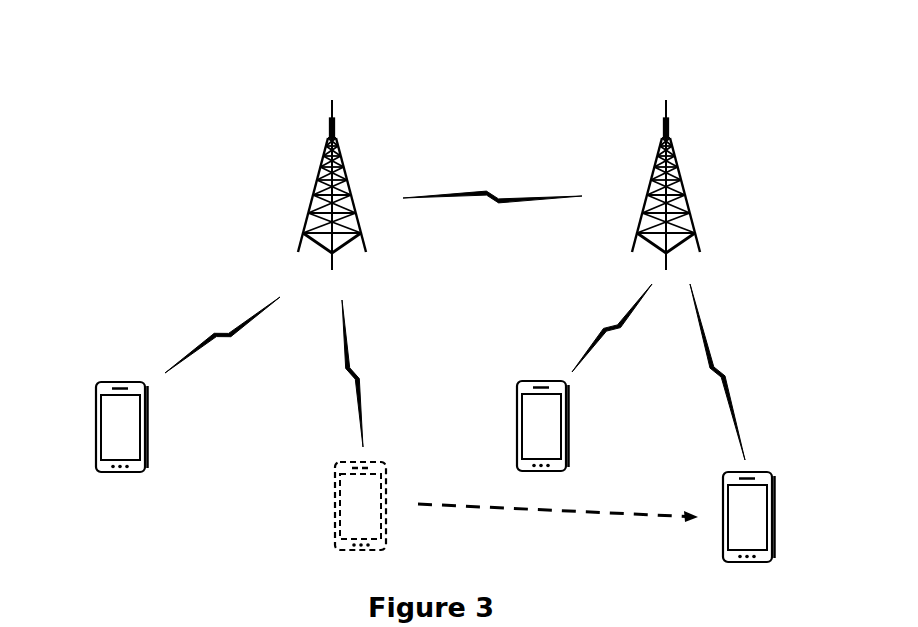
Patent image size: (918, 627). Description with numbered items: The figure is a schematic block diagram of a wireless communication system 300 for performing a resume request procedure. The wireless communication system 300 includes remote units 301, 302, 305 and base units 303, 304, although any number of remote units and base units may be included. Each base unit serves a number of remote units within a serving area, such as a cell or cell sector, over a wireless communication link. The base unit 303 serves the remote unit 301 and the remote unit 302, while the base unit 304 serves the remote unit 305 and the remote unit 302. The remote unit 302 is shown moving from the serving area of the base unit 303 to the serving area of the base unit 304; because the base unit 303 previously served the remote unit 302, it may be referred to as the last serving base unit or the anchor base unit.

The wireless communication system 300 is at (168, 86).
The remote unit 301 is at (95, 412).
The remote unit 302 is at (334, 494).
The base unit 303 is at (313, 187).
The base unit 304 is at (683, 193).
The remote unit 305 is at (516, 412).